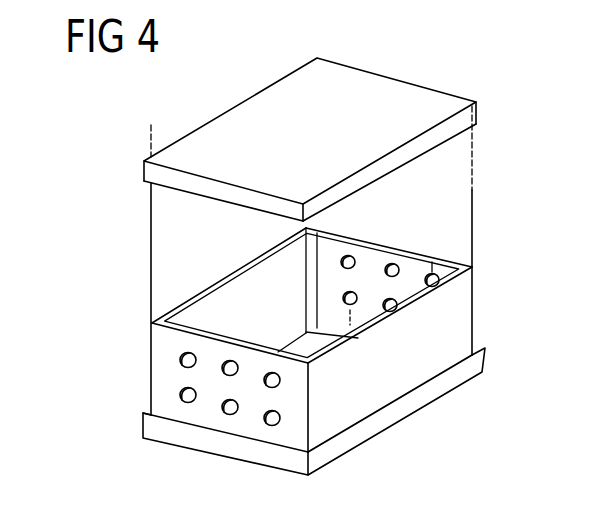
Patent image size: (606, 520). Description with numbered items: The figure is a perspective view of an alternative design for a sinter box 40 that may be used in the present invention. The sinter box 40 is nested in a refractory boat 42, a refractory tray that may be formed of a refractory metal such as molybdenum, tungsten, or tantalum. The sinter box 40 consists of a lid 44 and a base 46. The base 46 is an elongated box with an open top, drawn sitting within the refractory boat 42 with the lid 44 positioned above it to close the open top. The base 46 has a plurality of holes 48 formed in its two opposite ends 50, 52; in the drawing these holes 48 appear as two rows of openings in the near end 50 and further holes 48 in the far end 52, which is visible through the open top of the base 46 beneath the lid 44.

The sinter box 40 is at (297, 266).
The refractory boat 42 is at (477, 363).
The lid 44 is at (457, 105).
The base 46 is at (465, 307).
The holes 48 is at (346, 258).
The end 50 is at (222, 420).
The end 52 is at (416, 256).